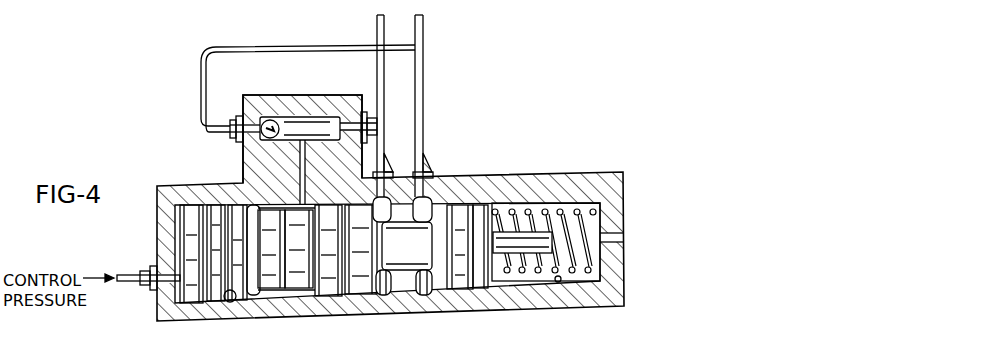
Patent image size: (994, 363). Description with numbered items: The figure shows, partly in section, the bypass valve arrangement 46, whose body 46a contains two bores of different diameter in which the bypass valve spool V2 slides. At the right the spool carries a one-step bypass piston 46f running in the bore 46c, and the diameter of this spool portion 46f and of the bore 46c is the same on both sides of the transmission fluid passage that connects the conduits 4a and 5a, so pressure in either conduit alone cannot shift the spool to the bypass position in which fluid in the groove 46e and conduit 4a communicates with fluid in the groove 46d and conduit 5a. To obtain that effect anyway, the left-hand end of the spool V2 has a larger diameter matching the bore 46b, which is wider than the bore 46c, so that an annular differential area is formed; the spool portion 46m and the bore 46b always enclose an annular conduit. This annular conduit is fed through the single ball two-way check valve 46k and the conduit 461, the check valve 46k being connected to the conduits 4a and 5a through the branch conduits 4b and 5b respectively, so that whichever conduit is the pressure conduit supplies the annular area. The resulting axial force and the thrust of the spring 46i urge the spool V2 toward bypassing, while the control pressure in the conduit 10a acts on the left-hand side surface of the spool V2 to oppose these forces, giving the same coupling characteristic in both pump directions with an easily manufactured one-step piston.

The bypass valve arrangement 46 is at (638, 186).
The valve housing 46a is at (563, 183).
The conduit 461 is at (243, 170).
The single ball two-way check valve 46k is at (287, 118).
The conduit 4a is at (376, 85).
The conduit 4b is at (379, 140).
The conduit 5a is at (423, 85).
The conduit 5b is at (201, 77).
The conduit 10a is at (128, 285).
The bore 46b is at (242, 298).
The spool portion 46m is at (302, 286).
The bypass valve spool V2 is at (358, 276).
The groove 46e is at (385, 288).
The groove 46d is at (428, 288).
The one-step bypass piston 46f is at (463, 207).
The spring 46i is at (530, 207).
The bore 46c is at (559, 283).